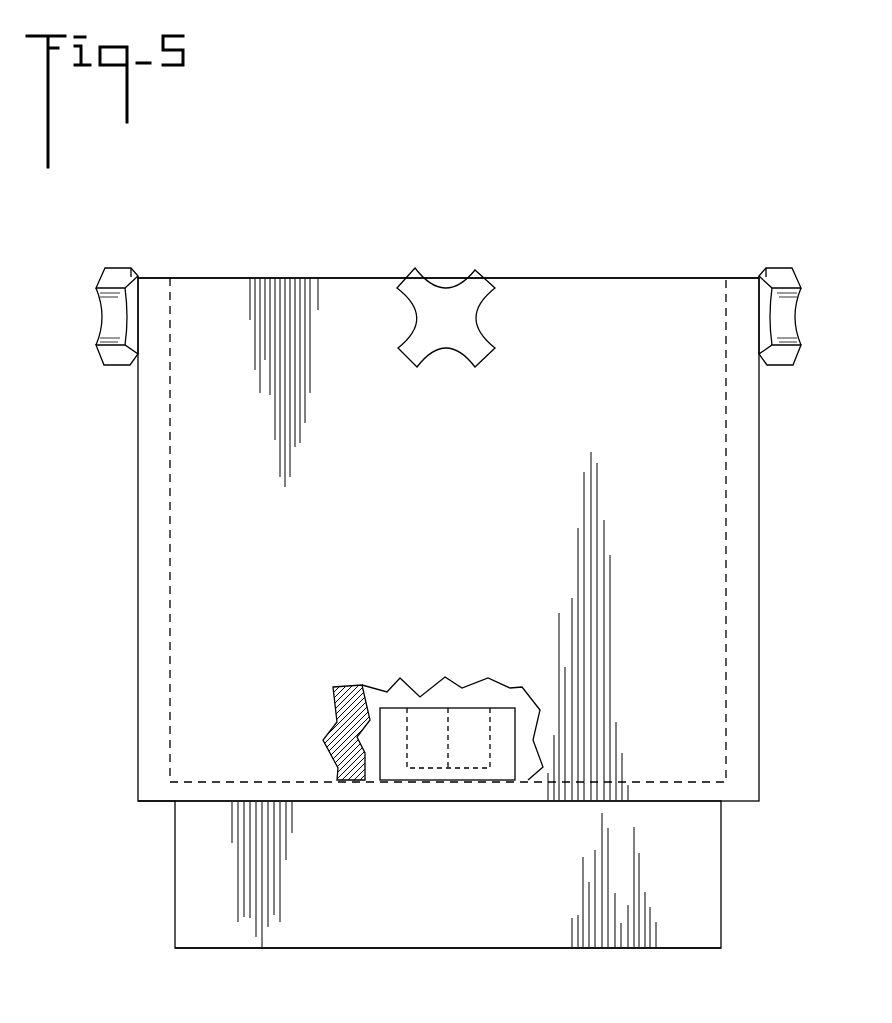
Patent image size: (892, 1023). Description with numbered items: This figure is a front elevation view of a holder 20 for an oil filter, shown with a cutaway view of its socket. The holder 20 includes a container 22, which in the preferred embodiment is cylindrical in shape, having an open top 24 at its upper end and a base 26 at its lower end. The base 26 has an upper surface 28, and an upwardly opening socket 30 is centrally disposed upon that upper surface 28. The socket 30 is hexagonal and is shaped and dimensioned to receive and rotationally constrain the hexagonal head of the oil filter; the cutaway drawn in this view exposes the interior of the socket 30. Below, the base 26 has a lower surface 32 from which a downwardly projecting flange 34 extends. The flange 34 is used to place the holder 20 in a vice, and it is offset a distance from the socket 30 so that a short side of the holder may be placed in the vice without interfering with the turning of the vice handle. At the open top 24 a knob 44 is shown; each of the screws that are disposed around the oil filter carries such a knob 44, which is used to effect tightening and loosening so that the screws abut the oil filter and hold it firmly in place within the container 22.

The holder 20 is at (699, 166).
The container 22 is at (759, 626).
The open top 24 is at (568, 278).
The base 26 is at (702, 793).
The upper surface 28 is at (672, 780).
The socket 30 is at (465, 708).
The lower surface 32 is at (157, 802).
The flange 34 is at (722, 945).
The knob 44 is at (418, 290).